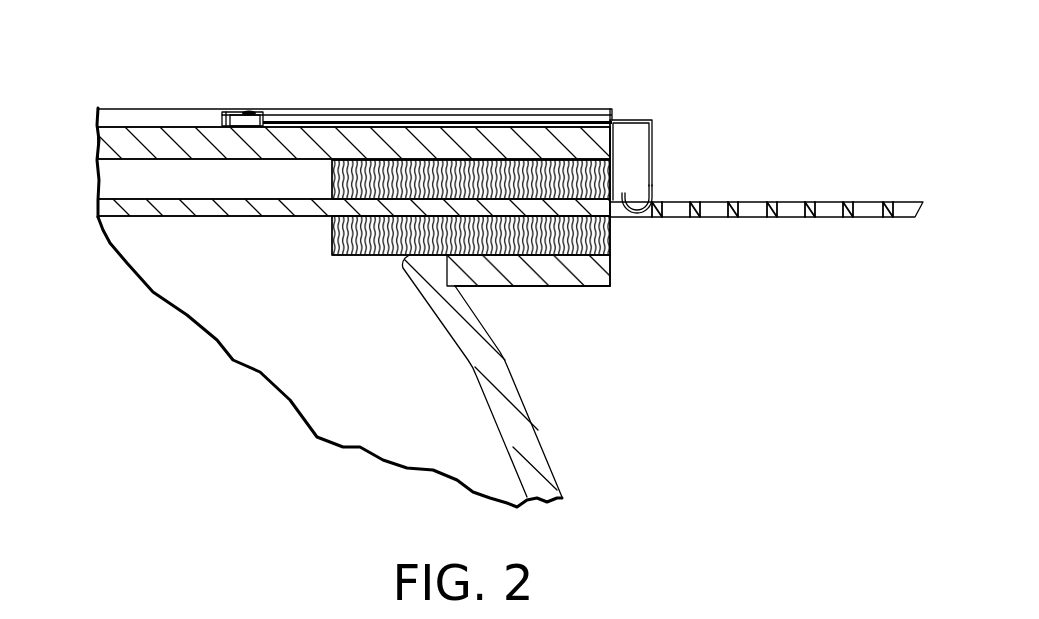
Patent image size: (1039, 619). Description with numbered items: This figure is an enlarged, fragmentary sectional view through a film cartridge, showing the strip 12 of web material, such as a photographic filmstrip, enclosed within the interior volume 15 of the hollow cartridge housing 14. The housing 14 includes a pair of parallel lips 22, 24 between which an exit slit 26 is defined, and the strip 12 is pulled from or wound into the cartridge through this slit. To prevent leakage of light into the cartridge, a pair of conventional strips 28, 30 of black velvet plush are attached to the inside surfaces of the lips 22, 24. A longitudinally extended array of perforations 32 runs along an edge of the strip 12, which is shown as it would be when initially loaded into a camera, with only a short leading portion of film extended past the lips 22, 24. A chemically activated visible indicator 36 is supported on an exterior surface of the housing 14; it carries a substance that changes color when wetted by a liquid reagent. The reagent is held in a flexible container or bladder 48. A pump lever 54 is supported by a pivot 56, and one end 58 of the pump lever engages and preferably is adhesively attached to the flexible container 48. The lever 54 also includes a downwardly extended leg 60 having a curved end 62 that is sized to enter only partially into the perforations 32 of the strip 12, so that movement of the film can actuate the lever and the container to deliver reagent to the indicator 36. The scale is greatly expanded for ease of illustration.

The strip or sheet of web material 12 is at (225, 207).
The cartridge body or housing 14 is at (490, 363).
The interior volume 15 is at (426, 408).
The lip 22 is at (584, 143).
The lip 24 is at (518, 273).
The exit slit 26 is at (615, 223).
The strip of black velvet plush 28 is at (617, 226).
The strip of black velvet plush 30 is at (565, 288).
The array of perforations 32 is at (718, 211).
The chemically activated visible indicator 36 is at (123, 119).
The flexible container or bladder 48 is at (240, 122).
The pump lever 54 is at (420, 108).
The pivot 56 is at (324, 120).
The end of the pump lever 58 is at (250, 110).
The downwardly extended leg 60 is at (654, 132).
The curved end 62 is at (642, 196).